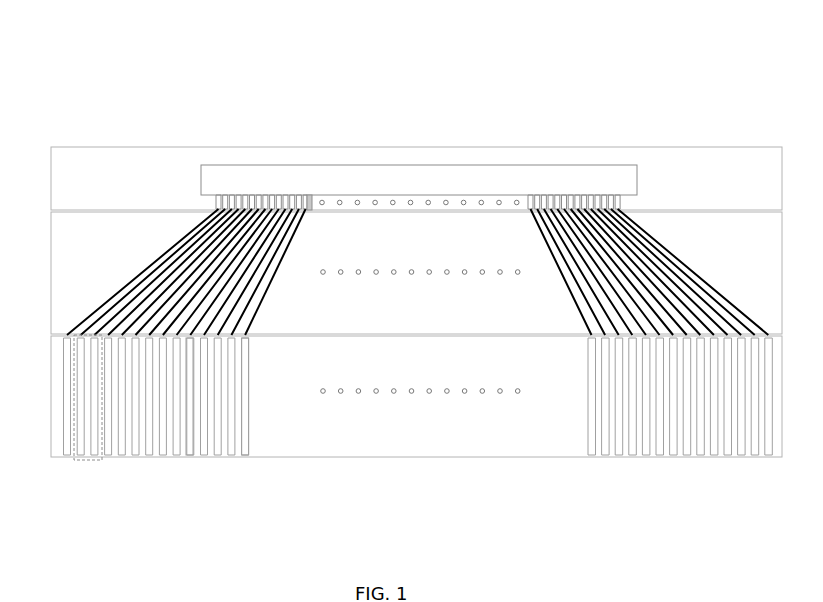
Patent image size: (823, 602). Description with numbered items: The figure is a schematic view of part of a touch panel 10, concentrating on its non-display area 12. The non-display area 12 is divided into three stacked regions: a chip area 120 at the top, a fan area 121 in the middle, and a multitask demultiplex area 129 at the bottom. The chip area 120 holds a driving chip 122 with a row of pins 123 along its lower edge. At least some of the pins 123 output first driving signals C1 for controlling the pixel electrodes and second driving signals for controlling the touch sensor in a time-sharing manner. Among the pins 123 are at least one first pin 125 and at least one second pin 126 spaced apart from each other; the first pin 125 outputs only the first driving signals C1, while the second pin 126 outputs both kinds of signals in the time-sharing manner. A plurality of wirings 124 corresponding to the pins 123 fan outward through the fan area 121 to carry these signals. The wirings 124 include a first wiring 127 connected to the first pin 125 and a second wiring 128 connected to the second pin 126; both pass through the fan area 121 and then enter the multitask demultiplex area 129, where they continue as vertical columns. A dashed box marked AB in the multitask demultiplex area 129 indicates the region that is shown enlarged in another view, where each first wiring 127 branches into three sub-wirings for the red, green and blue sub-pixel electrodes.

The touch panel 10 is at (416, 63).
The non-display area 12 is at (112, 134).
The chip area 120 is at (169, 147).
The fan area 121 is at (51, 274).
The driving chip 122 is at (330, 162).
The pins 123 is at (321, 221).
The wirings 124 is at (300, 266).
The first pin 125 is at (213, 208).
The second pin 126 is at (313, 205).
The first wiring 127 is at (147, 272).
The second wiring 128 is at (257, 316).
The multitask demultiplex area 129 is at (51, 417).
The area AB is at (95, 460).
The first driving signals C1 is at (189, 457).